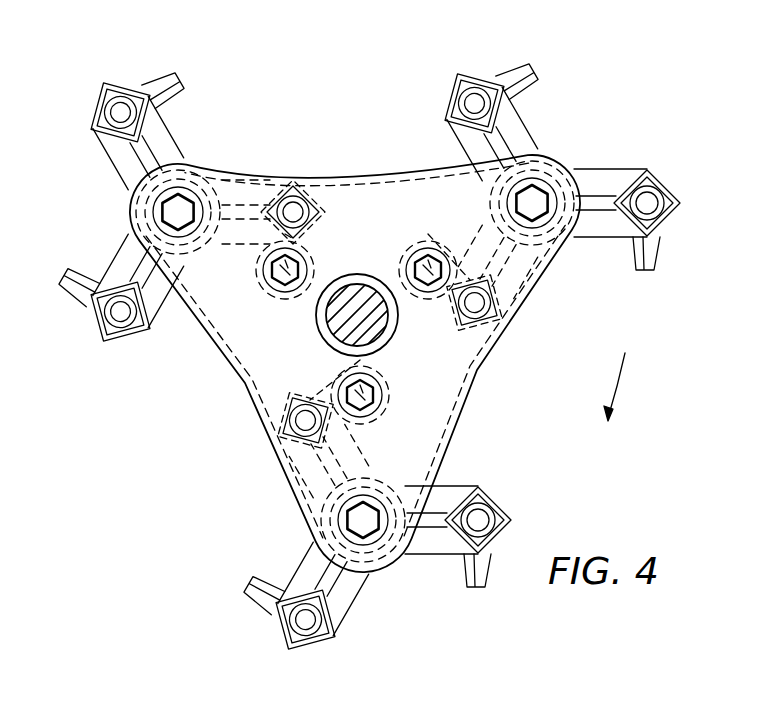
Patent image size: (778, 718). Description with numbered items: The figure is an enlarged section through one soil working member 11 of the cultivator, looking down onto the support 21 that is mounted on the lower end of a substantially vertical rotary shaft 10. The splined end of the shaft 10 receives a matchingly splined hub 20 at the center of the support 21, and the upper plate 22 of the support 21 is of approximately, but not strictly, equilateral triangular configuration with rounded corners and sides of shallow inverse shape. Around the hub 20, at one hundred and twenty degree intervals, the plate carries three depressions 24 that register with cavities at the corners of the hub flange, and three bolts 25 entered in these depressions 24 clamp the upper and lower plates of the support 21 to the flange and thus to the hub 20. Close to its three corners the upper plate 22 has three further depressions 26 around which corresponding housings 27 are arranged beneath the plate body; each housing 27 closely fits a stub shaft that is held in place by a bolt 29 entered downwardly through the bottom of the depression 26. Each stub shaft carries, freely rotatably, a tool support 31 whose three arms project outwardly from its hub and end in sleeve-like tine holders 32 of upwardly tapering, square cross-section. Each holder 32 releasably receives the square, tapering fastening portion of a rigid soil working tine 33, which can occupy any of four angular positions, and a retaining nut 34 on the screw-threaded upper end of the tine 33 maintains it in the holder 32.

The shaft 10 is at (358, 282).
The soil working member 11 is at (242, 388).
The hub 20 is at (323, 326).
The support 21 is at (336, 176).
The upper plate 22 is at (413, 184).
The depressions 24 is at (436, 246).
The bolts 25 is at (272, 288).
The depressions 26 is at (162, 216).
The housings 27 is at (566, 180).
The bolt 29 is at (181, 206).
The tool support 31 is at (521, 128).
The tine holder 32 is at (116, 92).
The soil working tine 33 is at (166, 70).
The retaining nut 34 is at (108, 113).